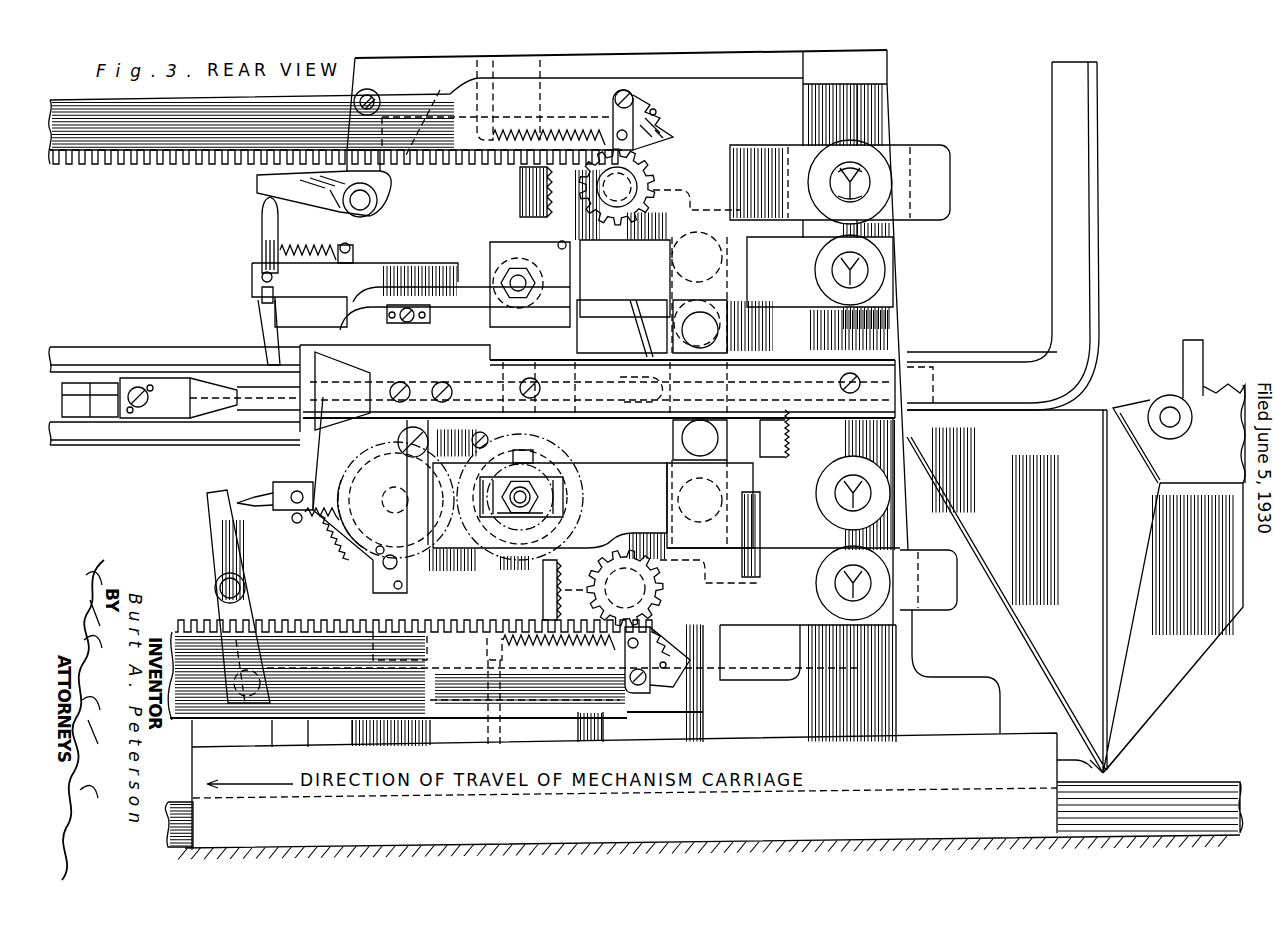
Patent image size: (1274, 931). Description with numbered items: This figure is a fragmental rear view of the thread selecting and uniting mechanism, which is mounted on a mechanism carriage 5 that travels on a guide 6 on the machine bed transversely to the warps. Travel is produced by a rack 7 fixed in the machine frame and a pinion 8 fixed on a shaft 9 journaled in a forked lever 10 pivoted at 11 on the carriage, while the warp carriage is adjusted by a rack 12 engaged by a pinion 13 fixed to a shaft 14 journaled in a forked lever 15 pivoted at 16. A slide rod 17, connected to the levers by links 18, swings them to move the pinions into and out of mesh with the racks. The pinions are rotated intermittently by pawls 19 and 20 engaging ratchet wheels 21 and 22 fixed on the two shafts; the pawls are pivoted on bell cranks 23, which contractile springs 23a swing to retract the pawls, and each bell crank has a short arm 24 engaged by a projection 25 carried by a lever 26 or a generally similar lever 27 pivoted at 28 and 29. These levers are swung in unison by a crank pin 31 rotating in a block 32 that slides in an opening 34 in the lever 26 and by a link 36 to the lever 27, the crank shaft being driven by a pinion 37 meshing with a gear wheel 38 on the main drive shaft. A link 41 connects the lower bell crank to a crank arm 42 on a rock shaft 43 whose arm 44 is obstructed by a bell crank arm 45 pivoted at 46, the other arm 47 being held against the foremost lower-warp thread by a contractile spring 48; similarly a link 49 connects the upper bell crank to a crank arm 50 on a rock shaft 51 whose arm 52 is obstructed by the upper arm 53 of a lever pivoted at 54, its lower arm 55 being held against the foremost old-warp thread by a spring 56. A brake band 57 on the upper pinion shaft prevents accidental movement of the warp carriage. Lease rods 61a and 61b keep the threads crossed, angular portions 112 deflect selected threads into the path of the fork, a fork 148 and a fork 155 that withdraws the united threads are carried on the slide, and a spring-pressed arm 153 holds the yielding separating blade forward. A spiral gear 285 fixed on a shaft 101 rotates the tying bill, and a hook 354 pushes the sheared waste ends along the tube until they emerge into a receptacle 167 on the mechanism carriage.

The mechanism carriage 5 is at (1040, 743).
The guide 6 is at (1167, 793).
The rack 7 is at (182, 598).
The pinion 8 is at (583, 593).
The shaft 9 is at (640, 600).
The forked lever 10 is at (777, 615).
The pivot 11 is at (863, 587).
The rack 12 is at (155, 143).
The pinion 13 is at (655, 183).
The shaft 14 is at (690, 143).
The forked lever 15 is at (770, 160).
The pivot 16 is at (862, 173).
The slide rod 17 is at (1055, 258).
The links 18 is at (727, 280).
The lower feed pawl 19 is at (652, 660).
The upper feed pawl 20 is at (647, 110).
The ratchet wheel 21 is at (555, 580).
The ratchet wheel 22 is at (557, 230).
The bell cranks 23 is at (610, 120).
The contractile springs 23a is at (513, 613).
The short arm 24 is at (675, 385).
The projection 25 is at (673, 187).
The lever 26 is at (785, 517).
The lever 27 is at (803, 290).
The pivot 28 is at (863, 500).
The pivot 29 is at (867, 262).
The crank pin 31 is at (543, 497).
The block 32 is at (497, 513).
The opening 34 is at (503, 510).
The link 36 is at (528, 432).
The pinion 37 is at (548, 511).
The gear wheel 38 is at (765, 440).
The link 41 is at (638, 697).
The crank arm 42 is at (252, 615).
The rock shaft 43 is at (248, 578).
The arm 44 is at (213, 522).
The bell crank arm 45 is at (263, 493).
The pivot 46 is at (290, 490).
The arm 47 is at (300, 522).
The contractile spring 48 is at (322, 530).
The link 49 is at (433, 90).
The crank arm 50 is at (373, 175).
The rock shaft 51 is at (365, 203).
The arm 52 is at (320, 203).
The upper arm 53 is at (267, 240).
The pivot 54 is at (260, 277).
The lower arm 55 is at (262, 307).
The contractile spring 56 is at (317, 247).
The brake band 57 is at (523, 208).
The lease rod 61a is at (112, 432).
The lease rod 61b is at (128, 357).
The shaft 101 is at (387, 497).
The angular portions 112 is at (273, 362).
The fork 148 is at (237, 380).
The spring-pressed arm 153 is at (77, 397).
The fork 155 is at (230, 390).
The receptacle 167 is at (1120, 433).
The spiral gear 285 is at (360, 530).
The hook 354 is at (343, 330).